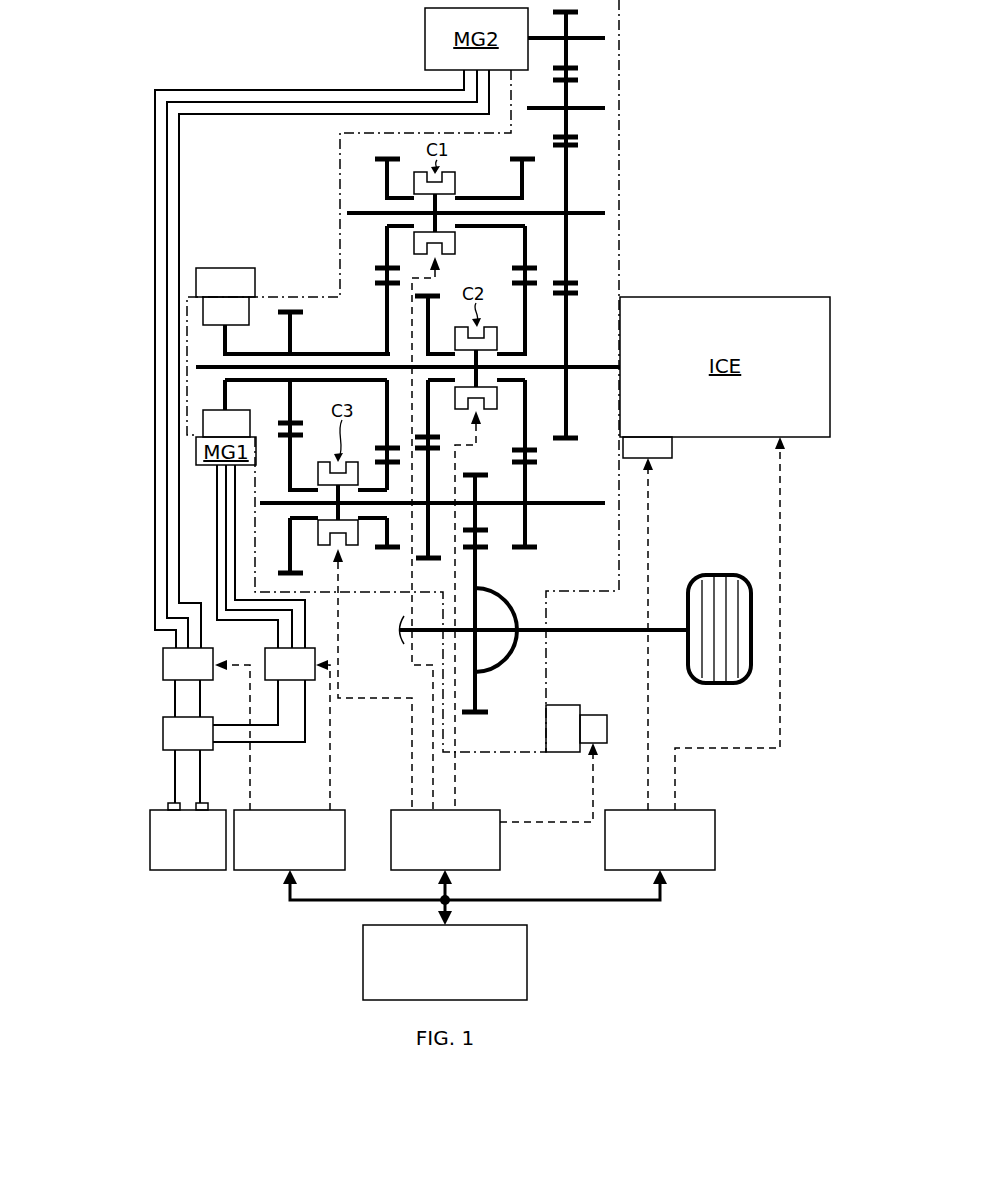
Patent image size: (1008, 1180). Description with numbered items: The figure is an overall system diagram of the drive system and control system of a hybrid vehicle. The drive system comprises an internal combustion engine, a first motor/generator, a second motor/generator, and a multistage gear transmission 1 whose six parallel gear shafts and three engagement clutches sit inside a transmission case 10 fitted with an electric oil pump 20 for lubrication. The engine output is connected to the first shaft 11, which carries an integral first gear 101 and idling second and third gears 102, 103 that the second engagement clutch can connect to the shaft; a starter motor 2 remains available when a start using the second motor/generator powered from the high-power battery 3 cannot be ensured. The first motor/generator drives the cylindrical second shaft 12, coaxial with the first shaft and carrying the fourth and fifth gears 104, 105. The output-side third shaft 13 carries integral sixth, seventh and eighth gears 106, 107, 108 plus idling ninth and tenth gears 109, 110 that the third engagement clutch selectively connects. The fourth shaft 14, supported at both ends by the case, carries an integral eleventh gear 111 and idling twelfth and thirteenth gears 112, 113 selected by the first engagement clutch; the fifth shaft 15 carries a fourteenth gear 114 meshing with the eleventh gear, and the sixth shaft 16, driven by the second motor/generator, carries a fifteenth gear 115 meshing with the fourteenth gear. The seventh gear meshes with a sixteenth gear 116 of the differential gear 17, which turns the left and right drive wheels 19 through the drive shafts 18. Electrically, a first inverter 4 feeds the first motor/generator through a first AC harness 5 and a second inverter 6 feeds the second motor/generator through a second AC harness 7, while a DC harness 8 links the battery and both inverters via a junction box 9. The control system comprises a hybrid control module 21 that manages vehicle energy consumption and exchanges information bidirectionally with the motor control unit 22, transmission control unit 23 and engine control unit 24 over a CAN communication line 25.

The multistage gear transmission 1 is at (628, 95).
The starter motor 2 is at (674, 447).
The high-power battery 3 is at (181, 871).
The first inverter 4 is at (309, 648).
The first AC harness 5 is at (266, 612).
The second inverter 6 is at (208, 648).
The second AC harness 7 is at (180, 540).
The DC harness 8 is at (196, 707).
The junction box 9 is at (165, 716).
The transmission case 10 is at (337, 180).
The first shaft 11 is at (580, 363).
The second shaft 12 is at (332, 350).
The third shaft 13 is at (580, 499).
The fourth shaft 14 is at (580, 210).
The fifth shaft 15 is at (577, 102).
The sixth shaft 16 is at (572, 35).
The differential gear 17 is at (504, 600).
The drive shafts 18 is at (432, 626).
The drive wheels 19 is at (722, 570).
The electric oil pump 20 is at (606, 702).
The hybrid control module 21 is at (527, 960).
The motor control unit 22 is at (291, 810).
The transmission control unit 23 is at (480, 810).
The engine control unit 24 is at (699, 810).
The CAN communication line 25 is at (545, 898).
The first gear 101 is at (566, 443).
The second gear 102 is at (532, 278).
The third gear 103 is at (430, 295).
The fourth gear 104 is at (380, 271).
The fifth gear 105 is at (328, 306).
The sixth gear 106 is at (528, 549).
The seventh gear 107 is at (474, 477).
The eighth gear 108 is at (430, 560).
The ninth gear 109 is at (388, 550).
The tenth gear 110 is at (282, 424).
The eleventh gear 111 is at (576, 284).
The twelfth gear 112 is at (528, 159).
The thirteenth gear 113 is at (384, 158).
The fourteenth gear 114 is at (557, 138).
The fifteenth gear 115 is at (556, 68).
The sixteenth gear 116 is at (477, 714).